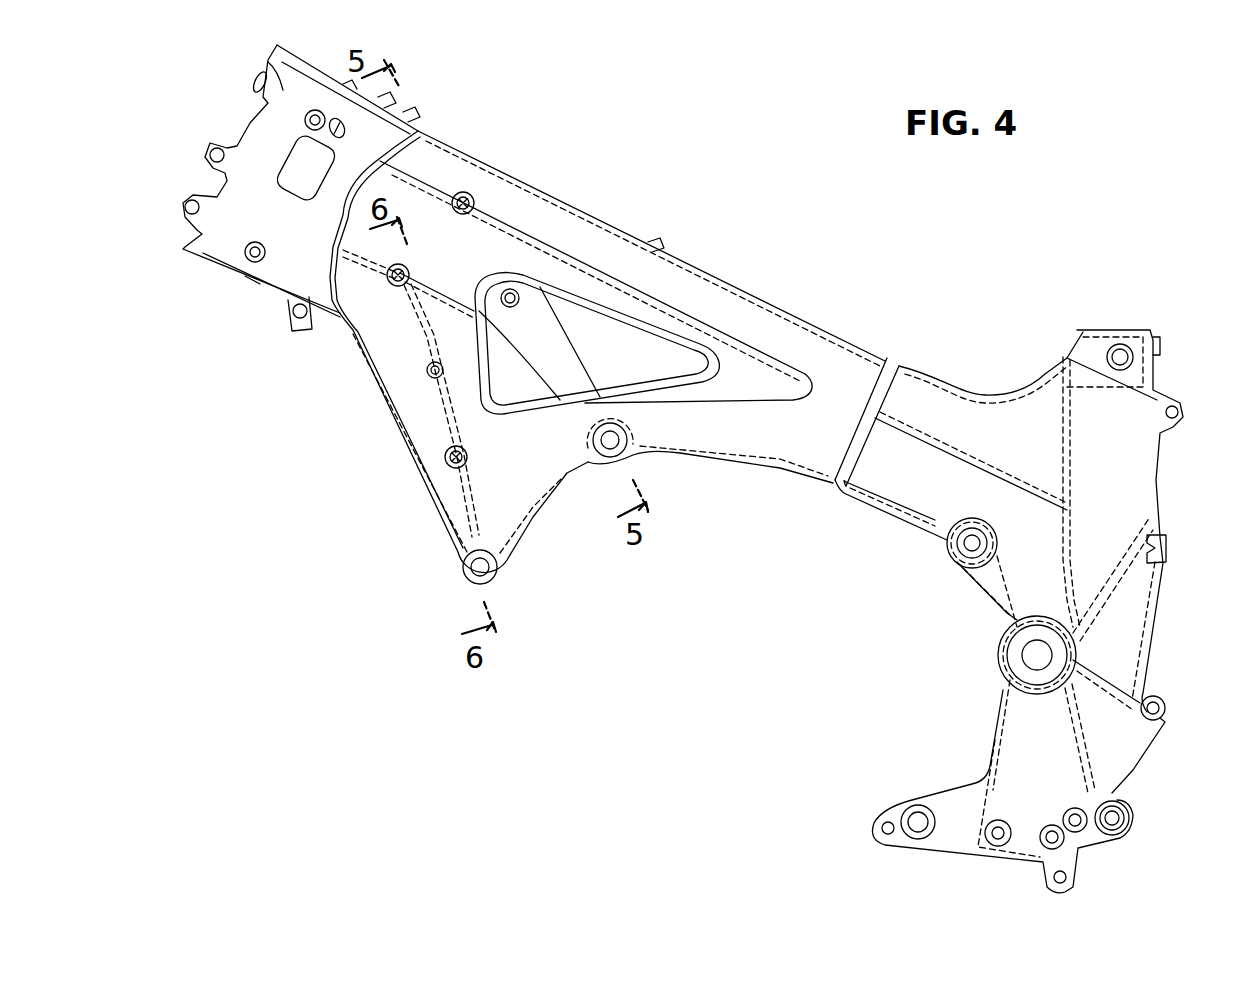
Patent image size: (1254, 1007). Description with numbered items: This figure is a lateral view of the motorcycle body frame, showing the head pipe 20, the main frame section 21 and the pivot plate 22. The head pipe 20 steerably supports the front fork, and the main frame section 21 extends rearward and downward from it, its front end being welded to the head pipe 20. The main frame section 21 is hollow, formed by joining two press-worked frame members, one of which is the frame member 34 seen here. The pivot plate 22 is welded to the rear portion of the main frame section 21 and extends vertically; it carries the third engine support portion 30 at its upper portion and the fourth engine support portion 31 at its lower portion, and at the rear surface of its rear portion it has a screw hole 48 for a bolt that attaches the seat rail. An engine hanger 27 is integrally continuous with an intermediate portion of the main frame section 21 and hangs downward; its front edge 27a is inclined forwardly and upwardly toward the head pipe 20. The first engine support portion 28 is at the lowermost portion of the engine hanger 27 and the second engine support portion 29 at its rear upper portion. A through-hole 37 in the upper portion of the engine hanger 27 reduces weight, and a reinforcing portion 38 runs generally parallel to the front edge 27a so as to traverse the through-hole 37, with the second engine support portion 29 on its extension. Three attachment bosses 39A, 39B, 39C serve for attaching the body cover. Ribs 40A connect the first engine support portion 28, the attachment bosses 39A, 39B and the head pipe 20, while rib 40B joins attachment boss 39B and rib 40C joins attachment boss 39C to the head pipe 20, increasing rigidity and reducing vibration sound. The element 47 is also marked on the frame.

The head pipe 20 is at (287, 273).
The main frame sections 21 is at (563, 200).
The pivot plates 22 is at (933, 393).
The engine hangers 27 is at (530, 522).
The front edge 27a is at (400, 412).
The first engine support portion 28 is at (480, 587).
The second engine support portion 29 is at (613, 460).
The third engine support portion 30 is at (960, 565).
The fourth engine support portion 31 is at (920, 800).
The frame member 34 is at (773, 327).
The through-hole 37 is at (643, 327).
The reinforcing portion 38 is at (567, 363).
The attachment boss 39A is at (447, 463).
The attachment boss 39B is at (397, 286).
The attachment boss 39C is at (467, 197).
The rib 40A is at (450, 415).
The rib 40B is at (442, 295).
The rib 40C is at (610, 273).
The rear bracket mounting hole 47 is at (1122, 340).
The screw hole 48 is at (1168, 546).